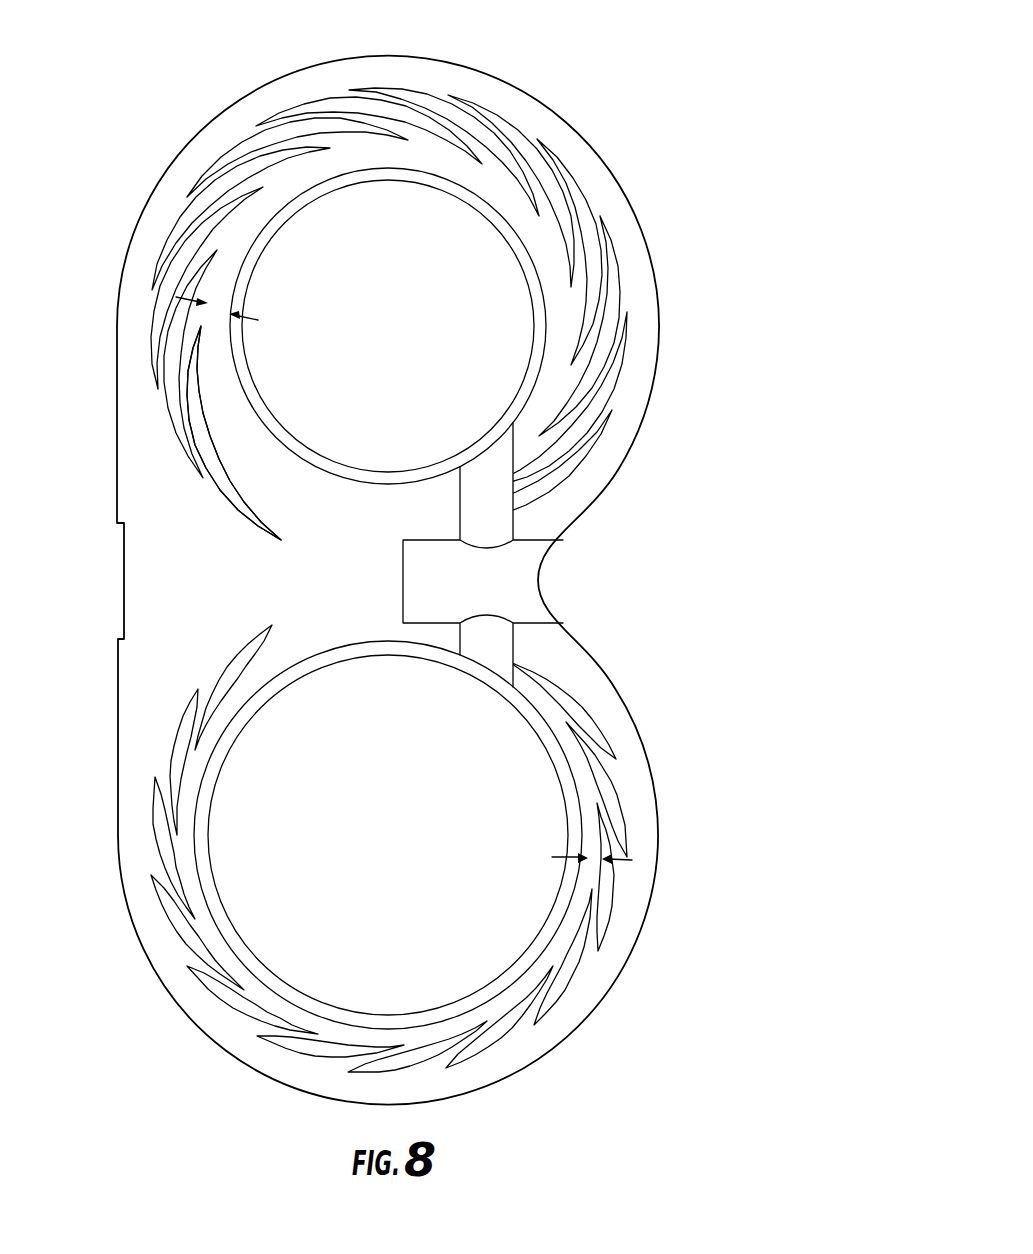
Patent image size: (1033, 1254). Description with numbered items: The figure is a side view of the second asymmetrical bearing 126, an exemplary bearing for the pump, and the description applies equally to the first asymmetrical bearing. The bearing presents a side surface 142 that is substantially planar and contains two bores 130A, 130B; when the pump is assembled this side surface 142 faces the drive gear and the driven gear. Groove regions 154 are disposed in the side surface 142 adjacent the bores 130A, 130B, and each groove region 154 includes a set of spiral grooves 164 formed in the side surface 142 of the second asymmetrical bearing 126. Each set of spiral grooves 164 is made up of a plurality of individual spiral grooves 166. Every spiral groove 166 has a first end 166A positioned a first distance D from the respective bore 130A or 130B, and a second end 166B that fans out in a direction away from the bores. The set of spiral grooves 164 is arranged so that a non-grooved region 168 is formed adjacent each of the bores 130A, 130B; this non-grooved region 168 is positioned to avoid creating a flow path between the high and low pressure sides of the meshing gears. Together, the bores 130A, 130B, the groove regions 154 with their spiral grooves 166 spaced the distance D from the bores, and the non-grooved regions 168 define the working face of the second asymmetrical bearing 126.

The second asymmetrical bearing 126 is at (730, 117).
The bore 130A is at (412, 344).
The bore 130B is at (412, 858).
The side surface 142 is at (165, 601).
The groove region 154 is at (158, 463).
The set of spiral grooves 164 is at (573, 161).
The spiral groove 166 is at (612, 268).
The first end 166A is at (210, 352).
The second end 166B is at (285, 620).
The non-grooved region 168 is at (406, 526).
The first distance D is at (220, 308).